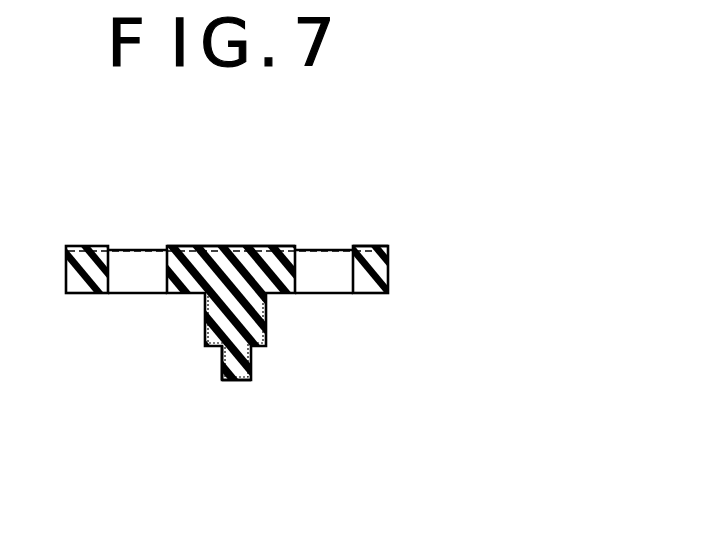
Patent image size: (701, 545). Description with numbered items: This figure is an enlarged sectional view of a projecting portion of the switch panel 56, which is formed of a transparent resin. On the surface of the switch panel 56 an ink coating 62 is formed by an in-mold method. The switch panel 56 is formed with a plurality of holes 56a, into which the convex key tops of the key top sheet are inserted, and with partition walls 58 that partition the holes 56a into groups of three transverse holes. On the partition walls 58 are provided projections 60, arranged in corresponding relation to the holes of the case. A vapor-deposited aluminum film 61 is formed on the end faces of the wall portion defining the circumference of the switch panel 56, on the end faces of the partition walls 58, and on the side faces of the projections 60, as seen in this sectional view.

The switch panel 56 is at (245, 268).
The holes 56a is at (353, 262).
The partition walls 58 is at (265, 322).
The projections 60 is at (237, 365).
The vapor-deposited aluminum film 61 is at (220, 368).
The ink coating 62 is at (189, 247).